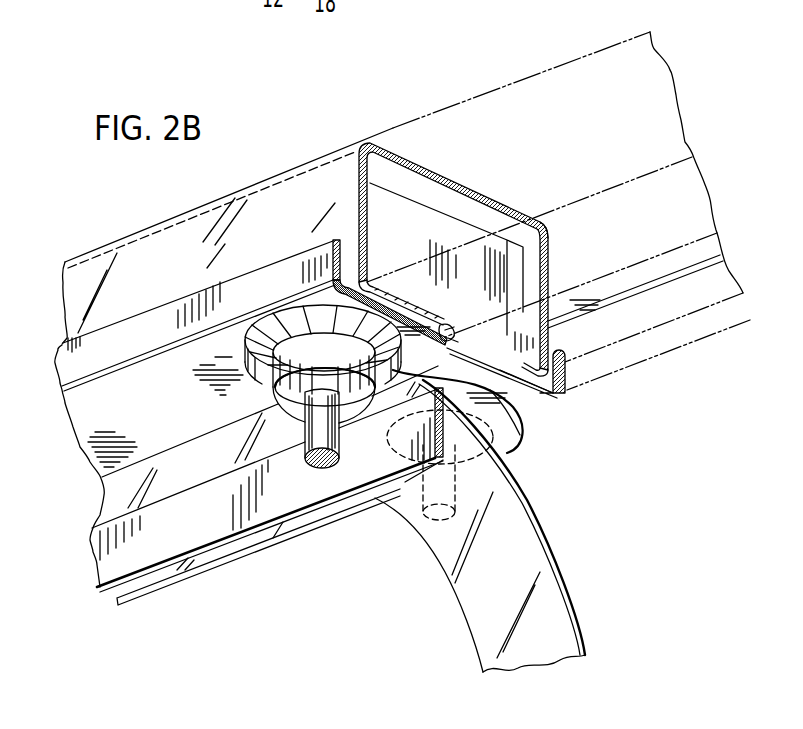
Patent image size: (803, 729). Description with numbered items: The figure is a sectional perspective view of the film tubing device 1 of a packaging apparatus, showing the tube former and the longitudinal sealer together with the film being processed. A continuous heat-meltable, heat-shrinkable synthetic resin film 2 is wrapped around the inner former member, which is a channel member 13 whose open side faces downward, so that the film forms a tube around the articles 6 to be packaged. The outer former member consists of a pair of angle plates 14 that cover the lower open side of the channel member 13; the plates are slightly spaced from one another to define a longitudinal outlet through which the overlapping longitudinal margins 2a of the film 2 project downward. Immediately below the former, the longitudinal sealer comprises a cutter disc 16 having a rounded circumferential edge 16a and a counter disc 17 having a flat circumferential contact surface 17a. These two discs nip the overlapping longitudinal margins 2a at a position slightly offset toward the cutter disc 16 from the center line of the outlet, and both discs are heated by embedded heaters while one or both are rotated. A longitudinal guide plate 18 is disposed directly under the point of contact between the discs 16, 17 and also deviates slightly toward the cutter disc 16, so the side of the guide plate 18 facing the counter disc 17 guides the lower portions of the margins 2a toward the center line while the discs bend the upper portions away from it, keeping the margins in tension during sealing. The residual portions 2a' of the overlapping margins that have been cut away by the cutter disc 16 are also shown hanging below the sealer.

The film tubing device 1 is at (557, 418).
The synthetic resin film 2 is at (567, 62).
The longitudinal margins 2a is at (410, 304).
The residual portions of the film overlapping margins 2a' is at (497, 526).
The articles 6 is at (447, 230).
The channel member 13 is at (549, 232).
The angle plates 14 is at (262, 272).
The cutter disc 16 is at (299, 330).
The rounded circumferential edge 16a is at (243, 334).
The counter disc 17 is at (518, 446).
The flat circumferential contact surface 17a is at (520, 428).
The longitudinal guide plate 18 is at (360, 472).